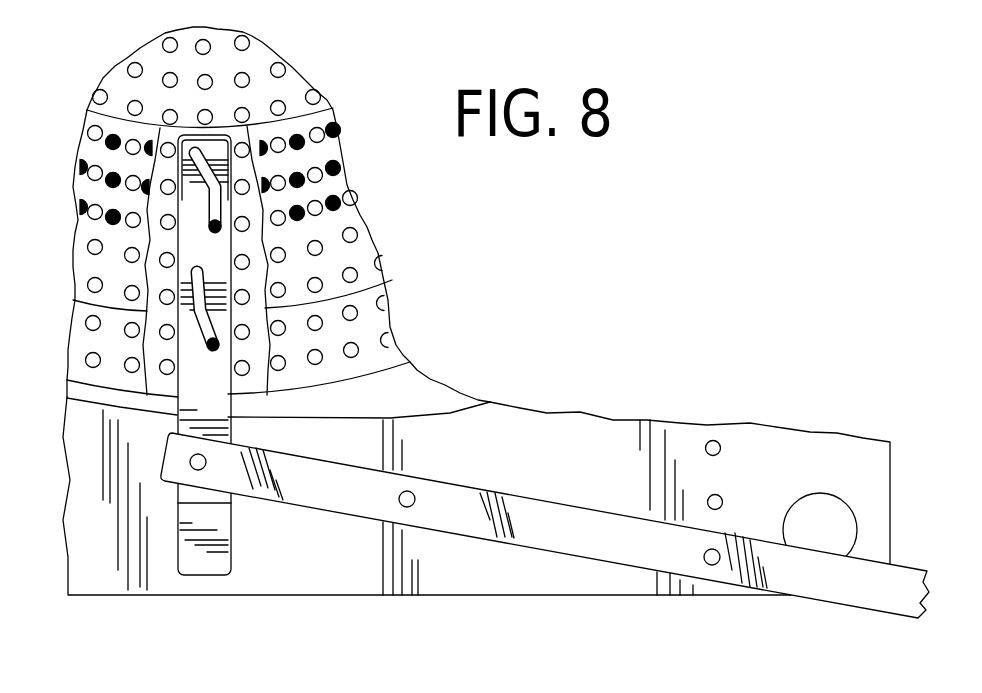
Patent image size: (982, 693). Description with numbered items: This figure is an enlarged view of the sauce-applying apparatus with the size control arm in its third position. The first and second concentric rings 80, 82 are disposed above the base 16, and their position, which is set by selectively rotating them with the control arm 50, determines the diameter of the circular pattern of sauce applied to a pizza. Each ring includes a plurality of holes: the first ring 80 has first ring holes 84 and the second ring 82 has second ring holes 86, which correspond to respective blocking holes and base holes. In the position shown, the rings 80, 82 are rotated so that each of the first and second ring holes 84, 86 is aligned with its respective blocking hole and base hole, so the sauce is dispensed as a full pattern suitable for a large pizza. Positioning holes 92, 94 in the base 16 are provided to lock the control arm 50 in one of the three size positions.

The base 16 is at (365, 573).
The control arm 50 is at (552, 532).
The first ring 80 is at (323, 150).
The second ring 82 is at (372, 318).
The first ring holes 84 is at (321, 129).
The second ring holes 86 is at (356, 308).
The positioning hole 92 is at (717, 441).
The positioning hole 94 is at (719, 495).